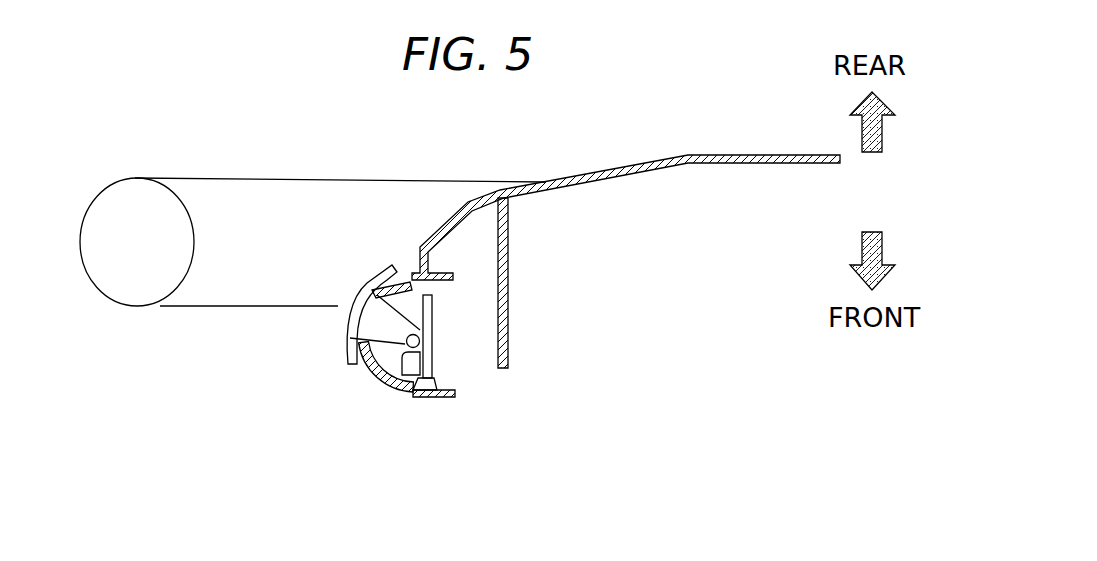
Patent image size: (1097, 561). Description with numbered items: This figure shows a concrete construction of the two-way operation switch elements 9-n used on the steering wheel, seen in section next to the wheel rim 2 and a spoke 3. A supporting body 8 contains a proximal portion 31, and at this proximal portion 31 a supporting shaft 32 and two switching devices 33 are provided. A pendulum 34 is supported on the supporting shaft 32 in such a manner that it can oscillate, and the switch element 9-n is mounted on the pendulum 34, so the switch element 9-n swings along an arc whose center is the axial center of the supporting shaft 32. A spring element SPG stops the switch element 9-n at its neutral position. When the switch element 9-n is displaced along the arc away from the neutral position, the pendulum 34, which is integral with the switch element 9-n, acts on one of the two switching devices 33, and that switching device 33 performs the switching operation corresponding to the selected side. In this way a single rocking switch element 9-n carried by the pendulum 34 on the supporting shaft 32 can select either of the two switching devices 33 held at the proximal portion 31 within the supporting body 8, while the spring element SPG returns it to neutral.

The wheel rim 2 is at (115, 303).
The spoke 3 is at (708, 165).
The supporting body 8 is at (378, 372).
The switch element 9-n is at (360, 280).
The proximal portion 31 is at (510, 338).
The supporting shaft 32 is at (419, 335).
The switching device 33 is at (407, 277).
The pendulum 34 is at (372, 322).
The spring element SPG is at (455, 398).